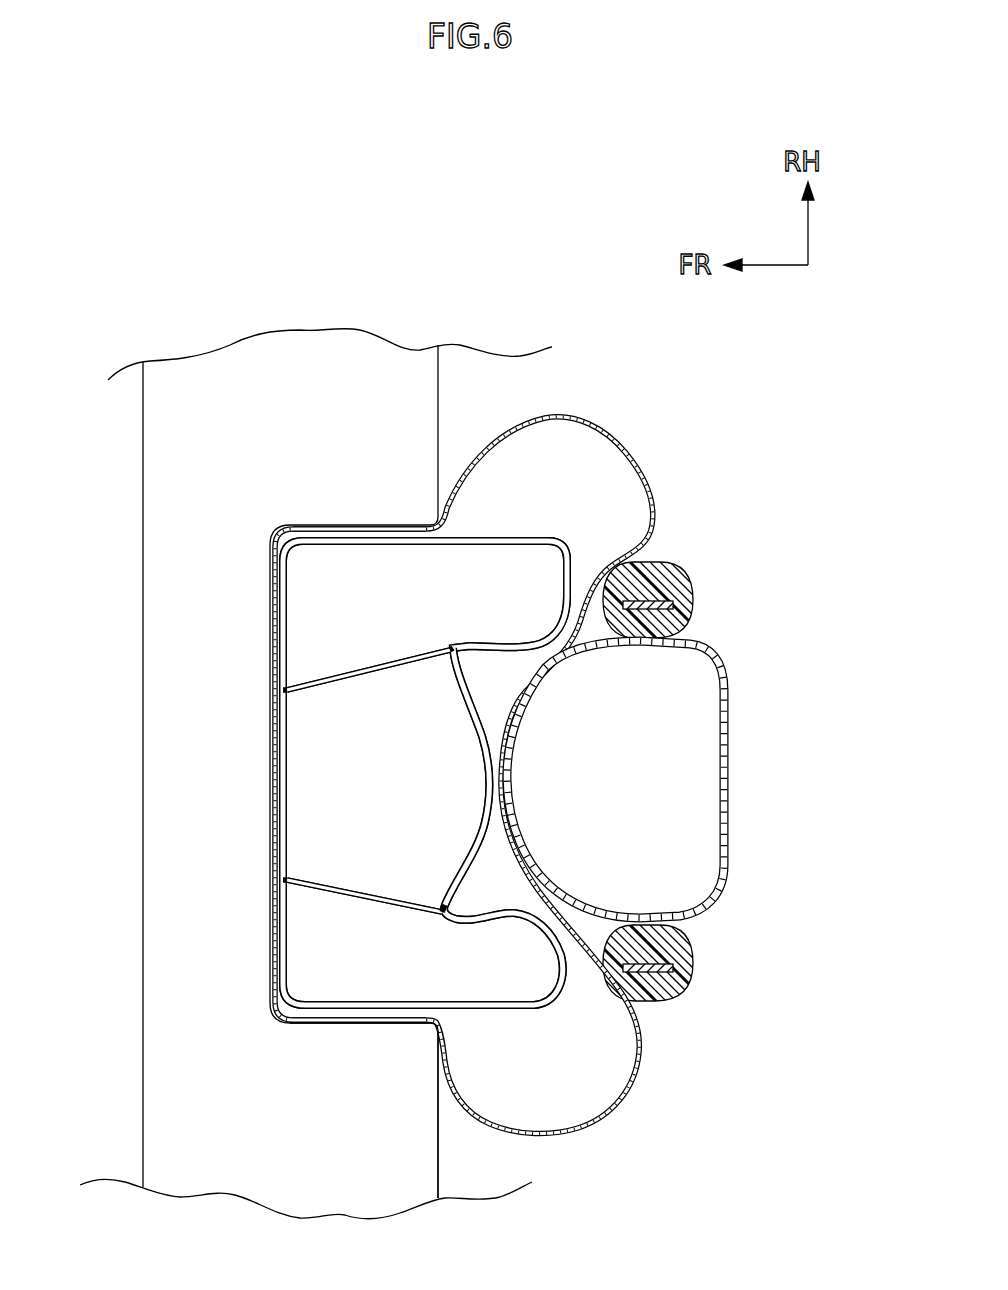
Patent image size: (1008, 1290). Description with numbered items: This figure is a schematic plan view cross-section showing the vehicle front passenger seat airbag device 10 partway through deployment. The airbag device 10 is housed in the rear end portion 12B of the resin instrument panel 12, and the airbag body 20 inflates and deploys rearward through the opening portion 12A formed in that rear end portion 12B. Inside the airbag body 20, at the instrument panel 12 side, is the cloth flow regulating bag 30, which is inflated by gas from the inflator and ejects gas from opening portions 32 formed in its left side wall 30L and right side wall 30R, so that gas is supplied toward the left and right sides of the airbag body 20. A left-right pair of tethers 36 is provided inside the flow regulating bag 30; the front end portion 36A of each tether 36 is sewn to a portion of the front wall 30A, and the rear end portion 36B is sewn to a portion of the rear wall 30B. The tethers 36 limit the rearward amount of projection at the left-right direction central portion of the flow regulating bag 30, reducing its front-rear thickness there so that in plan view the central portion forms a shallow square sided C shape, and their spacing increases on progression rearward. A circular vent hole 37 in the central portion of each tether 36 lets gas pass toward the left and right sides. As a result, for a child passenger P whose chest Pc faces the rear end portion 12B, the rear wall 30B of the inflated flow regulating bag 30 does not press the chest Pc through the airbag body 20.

The vehicle front passenger seat airbag device 10 is at (597, 402).
The instrument panel 12 is at (247, 383).
The opening portion 12A is at (448, 1040).
The rear end portion 12B is at (440, 1152).
The airbag body 20 is at (636, 462).
The flow regulating bag 30 is at (569, 546).
The front wall 30A is at (290, 785).
The rear wall 30B is at (478, 786).
The right side wall 30R is at (523, 537).
The left side wall 30L is at (520, 1008).
The opening portions 32 is at (455, 530).
The tethers 36 is at (393, 678).
The front end portion 36A is at (287, 662).
The rear end portion 36B is at (447, 645).
The vent hole 37 is at (344, 668).
The child passenger P is at (737, 767).
The chest Pc is at (512, 835).